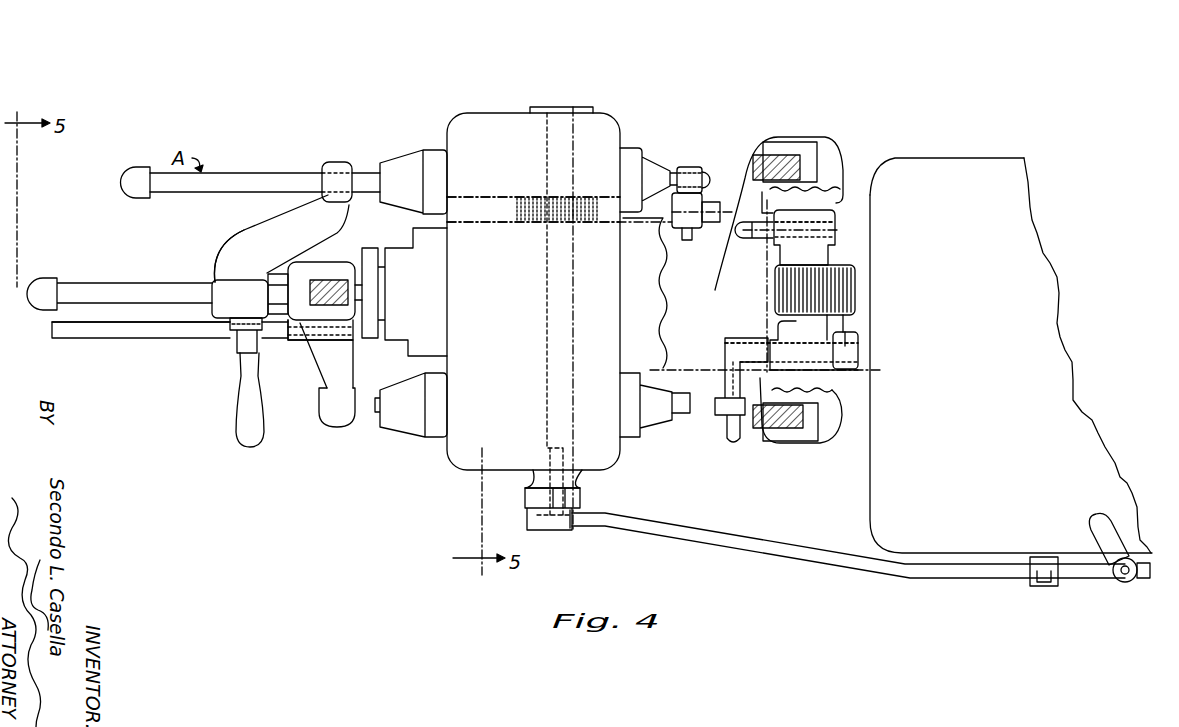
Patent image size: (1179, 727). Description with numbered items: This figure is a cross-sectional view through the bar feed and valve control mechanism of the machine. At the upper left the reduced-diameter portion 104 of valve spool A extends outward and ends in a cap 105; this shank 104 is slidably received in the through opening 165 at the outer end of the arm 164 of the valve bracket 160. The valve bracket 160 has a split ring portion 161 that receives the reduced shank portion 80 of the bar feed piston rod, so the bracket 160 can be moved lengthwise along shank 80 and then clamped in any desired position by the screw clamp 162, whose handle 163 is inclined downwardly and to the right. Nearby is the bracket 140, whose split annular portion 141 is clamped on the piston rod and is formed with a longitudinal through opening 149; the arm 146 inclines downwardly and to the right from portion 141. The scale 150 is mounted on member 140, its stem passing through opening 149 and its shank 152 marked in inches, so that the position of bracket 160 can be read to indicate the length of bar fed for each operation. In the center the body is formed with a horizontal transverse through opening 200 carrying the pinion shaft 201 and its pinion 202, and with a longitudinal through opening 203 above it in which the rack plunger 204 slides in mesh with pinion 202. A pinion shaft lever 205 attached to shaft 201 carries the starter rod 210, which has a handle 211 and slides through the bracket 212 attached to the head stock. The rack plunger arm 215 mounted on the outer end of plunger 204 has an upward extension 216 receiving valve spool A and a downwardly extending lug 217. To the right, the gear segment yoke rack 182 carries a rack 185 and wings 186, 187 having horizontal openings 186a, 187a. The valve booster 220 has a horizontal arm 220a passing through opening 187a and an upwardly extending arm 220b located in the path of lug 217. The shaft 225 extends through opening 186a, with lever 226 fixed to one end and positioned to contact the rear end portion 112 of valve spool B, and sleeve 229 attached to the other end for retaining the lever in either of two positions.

The piston rod shank portion 80 is at (108, 283).
The reduced diameter portion 104 is at (218, 172).
The cap 105 is at (136, 170).
The end portion 112 is at (679, 418).
The bracket 140 is at (338, 440).
The split annular portion 141 is at (342, 262).
The arm 146 is at (344, 356).
The longitudinal through opening 149 is at (303, 342).
The scale 150 is at (85, 340).
The shank 152 is at (163, 340).
The valve bracket 160 is at (240, 231).
The split ring portion 161 is at (215, 282).
The screw clamp 162 is at (234, 352).
The handle 163 is at (249, 440).
The arm 164 is at (280, 227).
The through opening 165 is at (342, 165).
The gear segment yoke rack 182 is at (837, 254).
The rack 185 is at (835, 292).
The wing 186 is at (820, 372).
The through opening 186a is at (860, 343).
The wing 187 is at (826, 211).
The through opening 187a is at (822, 232).
The horizontal transverse through opening 200 is at (547, 403).
The pinion shaft 201 is at (574, 368).
The pinion 202 is at (553, 224).
The longitudinal through opening 203 is at (468, 196).
The rack plunger 204 is at (493, 211).
The pinion shaft lever 205 is at (582, 500).
The starter rod 210 is at (740, 547).
The handle 211 is at (1101, 518).
The bracket 212 is at (1045, 557).
The rack plunger arm 215 is at (678, 212).
The upward extension 216 is at (690, 165).
The lug 217 is at (688, 241).
The valve booster 220 is at (757, 248).
The horizontal arm 220a is at (748, 168).
The upwardly extending arm 220b is at (772, 364).
The shaft 225 is at (790, 340).
The lever 226 is at (725, 345).
The sleeve 229 is at (858, 366).